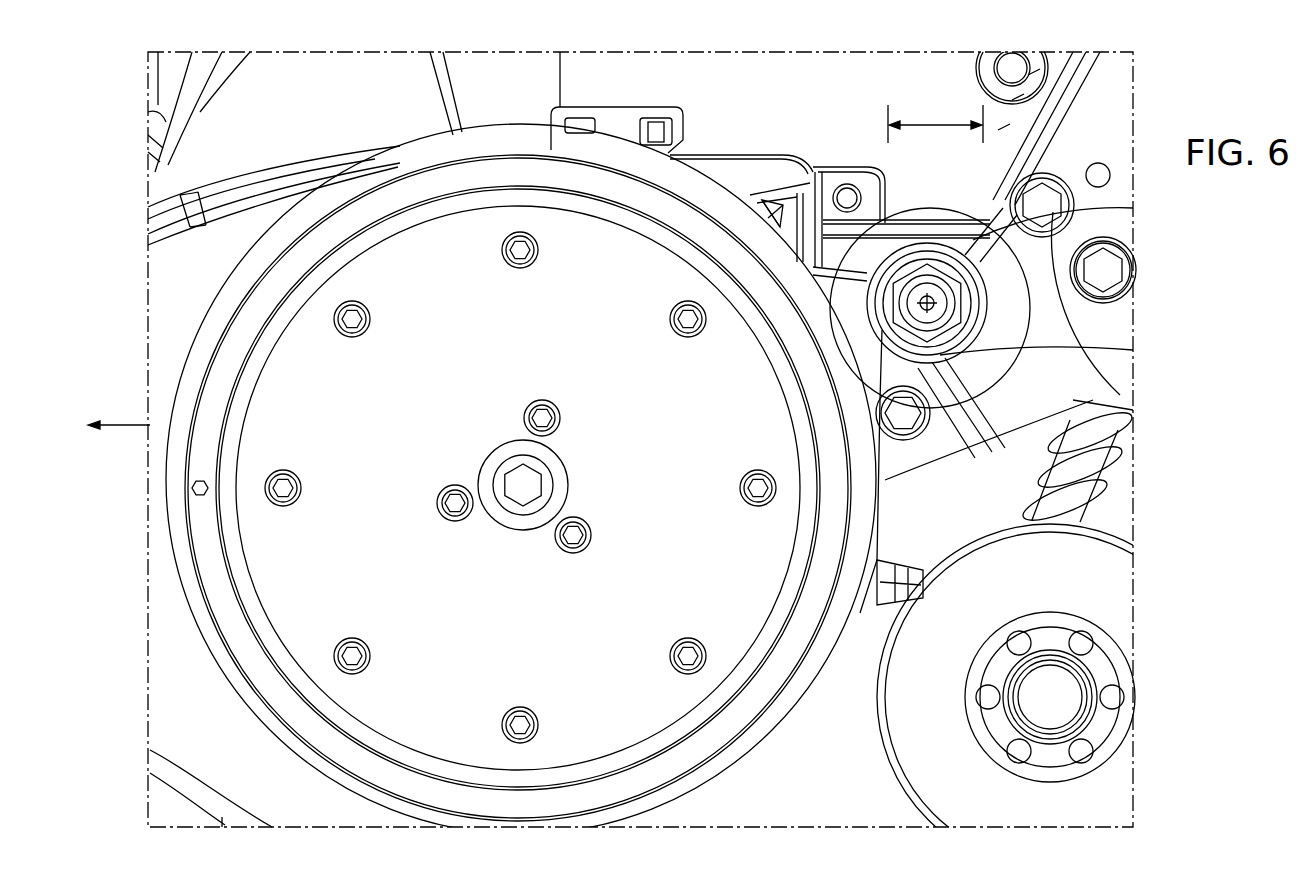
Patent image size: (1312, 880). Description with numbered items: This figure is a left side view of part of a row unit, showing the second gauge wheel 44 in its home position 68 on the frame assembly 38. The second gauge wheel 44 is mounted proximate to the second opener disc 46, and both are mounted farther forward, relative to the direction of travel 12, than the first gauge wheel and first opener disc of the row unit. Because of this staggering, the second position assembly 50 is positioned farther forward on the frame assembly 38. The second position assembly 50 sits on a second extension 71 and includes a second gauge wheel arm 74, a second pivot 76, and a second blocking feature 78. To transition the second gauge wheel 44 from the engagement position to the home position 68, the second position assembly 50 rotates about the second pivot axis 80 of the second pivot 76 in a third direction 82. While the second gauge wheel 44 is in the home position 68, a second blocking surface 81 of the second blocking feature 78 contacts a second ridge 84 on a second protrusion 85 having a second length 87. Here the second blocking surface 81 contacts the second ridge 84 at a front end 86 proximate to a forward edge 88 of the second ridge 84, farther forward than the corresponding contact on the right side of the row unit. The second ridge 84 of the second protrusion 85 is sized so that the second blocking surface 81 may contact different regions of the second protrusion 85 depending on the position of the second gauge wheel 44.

The direction of travel 12 is at (143, 425).
The frame assembly 38 is at (1122, 43).
The second gauge wheel 44 is at (808, 692).
The second opener disc 46 is at (222, 820).
The second position assembly 50 is at (958, 376).
The home position 68 is at (914, 500).
The second extension 71 is at (958, 300).
The second gauge wheel arm 74 is at (913, 312).
The second pivot 76 is at (990, 350).
The second blocking feature 78 is at (1137, 258).
The second pivot axis 80 is at (905, 303).
The second blocking surface 81 is at (990, 250).
The third direction 82 is at (925, 420).
The second ridge 84 is at (926, 220).
The second protrusion 85 is at (900, 178).
The front end 86 is at (955, 190).
The second length 87 is at (922, 123).
The forward edge 88 is at (1032, 185).